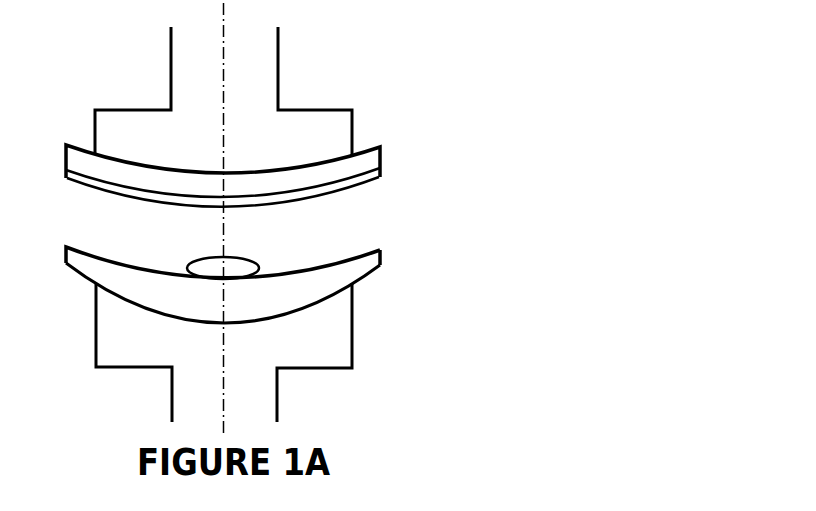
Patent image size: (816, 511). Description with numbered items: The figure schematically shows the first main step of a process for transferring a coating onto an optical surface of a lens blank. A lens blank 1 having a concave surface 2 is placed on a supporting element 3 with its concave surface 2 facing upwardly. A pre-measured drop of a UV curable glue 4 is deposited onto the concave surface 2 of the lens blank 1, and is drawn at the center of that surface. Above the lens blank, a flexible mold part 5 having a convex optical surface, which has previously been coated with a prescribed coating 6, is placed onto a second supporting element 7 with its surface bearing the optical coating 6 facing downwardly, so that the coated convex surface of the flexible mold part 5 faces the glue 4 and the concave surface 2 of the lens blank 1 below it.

The lens blank 1 is at (355, 270).
The concave surface 2 is at (345, 253).
The supporting element 3 is at (335, 358).
The UV curable glue 4 is at (233, 270).
The flexible mold part 5 is at (373, 157).
The coating 6 is at (380, 172).
The supporting element 7 is at (342, 116).